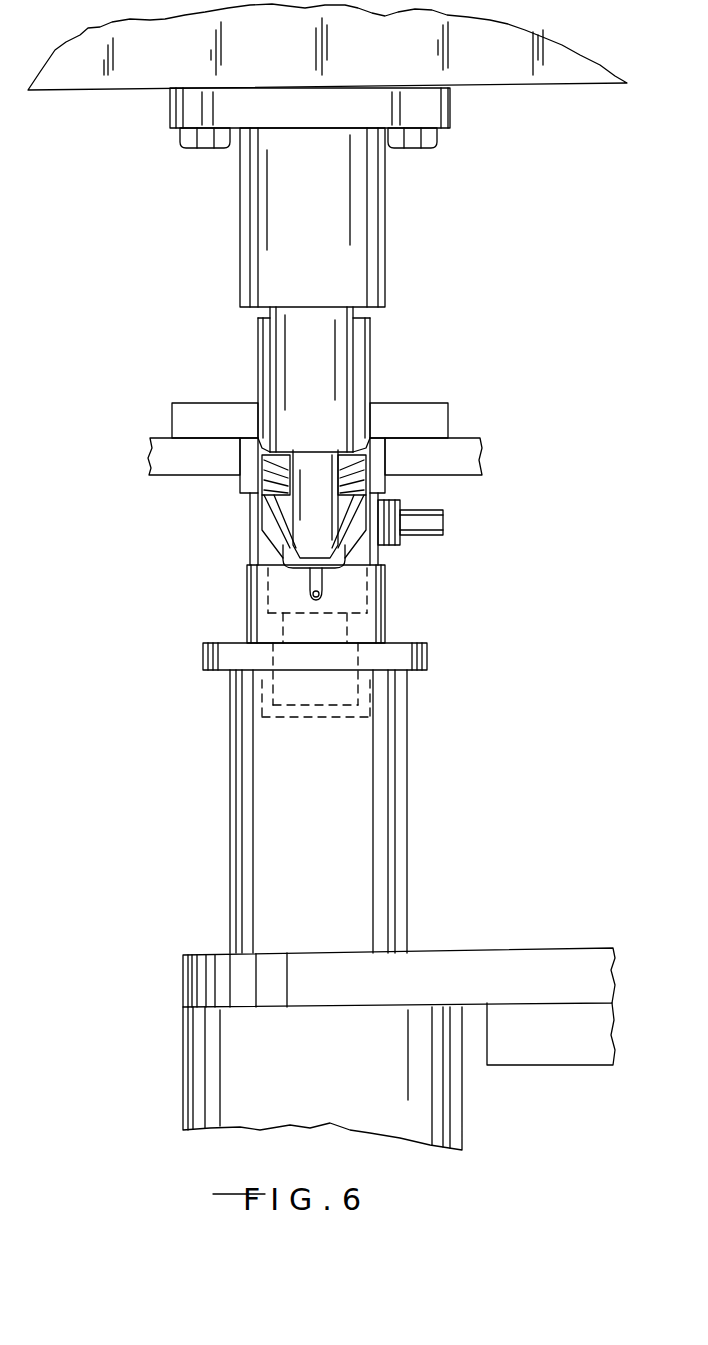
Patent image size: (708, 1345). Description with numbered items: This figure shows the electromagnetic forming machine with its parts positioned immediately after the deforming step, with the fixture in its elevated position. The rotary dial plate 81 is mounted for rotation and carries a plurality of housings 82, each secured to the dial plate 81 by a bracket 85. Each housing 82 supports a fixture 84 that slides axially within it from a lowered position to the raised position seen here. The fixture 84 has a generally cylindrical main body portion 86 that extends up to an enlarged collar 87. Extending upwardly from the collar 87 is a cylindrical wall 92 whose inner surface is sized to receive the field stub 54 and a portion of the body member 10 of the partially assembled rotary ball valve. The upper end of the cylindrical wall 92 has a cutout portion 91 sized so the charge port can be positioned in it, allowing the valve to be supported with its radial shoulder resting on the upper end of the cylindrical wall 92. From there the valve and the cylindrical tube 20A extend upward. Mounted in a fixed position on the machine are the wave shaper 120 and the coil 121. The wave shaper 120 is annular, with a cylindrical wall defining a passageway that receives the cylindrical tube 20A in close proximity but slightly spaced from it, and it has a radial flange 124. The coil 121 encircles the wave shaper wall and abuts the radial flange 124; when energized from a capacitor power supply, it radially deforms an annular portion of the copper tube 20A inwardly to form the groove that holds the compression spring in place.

The cylindrical tube 20A is at (258, 372).
The radial flange 124 is at (405, 403).
The wave shaper 120 is at (452, 403).
The coil 121 is at (482, 455).
The cylindrical wall 92 is at (247, 582).
The cutout portion 91 is at (377, 577).
The body member 10 is at (388, 600).
The enlarged collar 87 is at (203, 650).
The field stub 54 is at (372, 693).
The main body portion 86 is at (253, 776).
The fixture 84 is at (335, 822).
The bracket 85 is at (547, 965).
The housing 82 is at (332, 1070).
The rotary dial plate 81 is at (546, 1052).